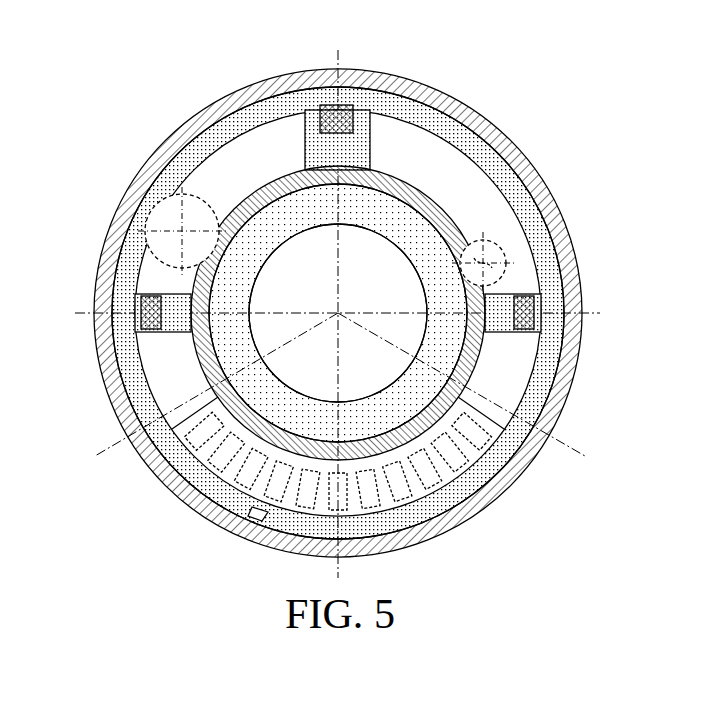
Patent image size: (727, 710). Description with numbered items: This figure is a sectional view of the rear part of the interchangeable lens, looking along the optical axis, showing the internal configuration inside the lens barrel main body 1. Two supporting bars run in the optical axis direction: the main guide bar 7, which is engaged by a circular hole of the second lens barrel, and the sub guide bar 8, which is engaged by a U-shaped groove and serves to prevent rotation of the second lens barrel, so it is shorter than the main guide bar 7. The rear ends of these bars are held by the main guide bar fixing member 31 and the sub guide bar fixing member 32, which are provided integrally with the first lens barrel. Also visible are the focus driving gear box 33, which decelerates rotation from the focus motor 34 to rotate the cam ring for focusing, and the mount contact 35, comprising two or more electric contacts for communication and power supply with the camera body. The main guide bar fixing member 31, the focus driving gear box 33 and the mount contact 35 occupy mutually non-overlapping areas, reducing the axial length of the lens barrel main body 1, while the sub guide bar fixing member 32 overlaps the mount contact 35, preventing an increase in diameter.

The lens barrel main body 1 is at (510, 152).
The main guide bar 7 is at (489, 245).
The sub guide bar 8 is at (253, 447).
The main guide bar fixing member 31 is at (523, 283).
The sub guide bar fixing member 32 is at (258, 514).
The focus driving gear box 33 is at (238, 153).
The focus motor 34 is at (180, 232).
The mount contact 35 is at (435, 480).